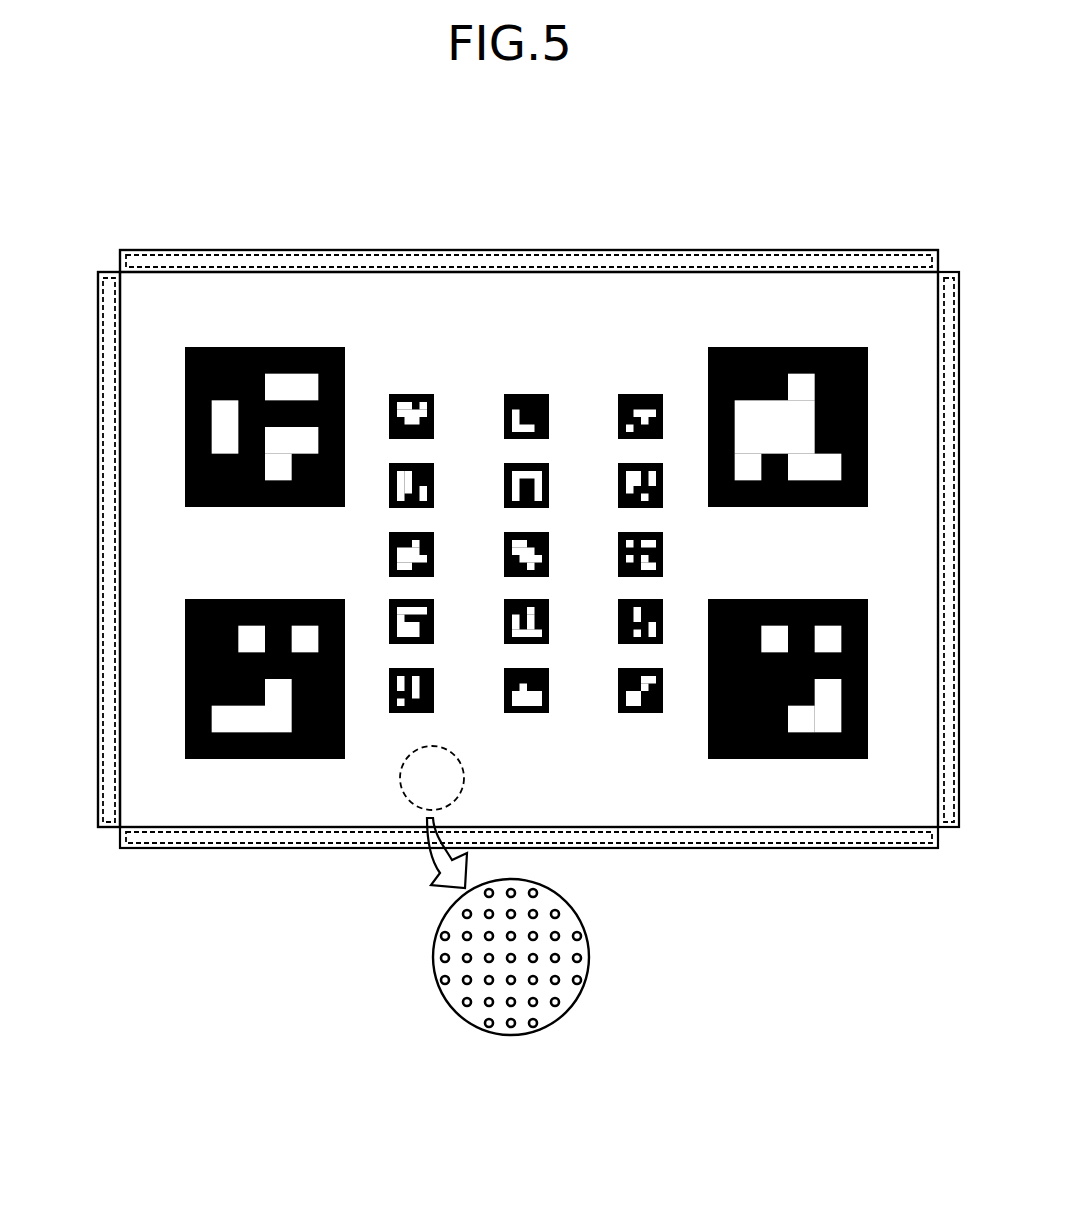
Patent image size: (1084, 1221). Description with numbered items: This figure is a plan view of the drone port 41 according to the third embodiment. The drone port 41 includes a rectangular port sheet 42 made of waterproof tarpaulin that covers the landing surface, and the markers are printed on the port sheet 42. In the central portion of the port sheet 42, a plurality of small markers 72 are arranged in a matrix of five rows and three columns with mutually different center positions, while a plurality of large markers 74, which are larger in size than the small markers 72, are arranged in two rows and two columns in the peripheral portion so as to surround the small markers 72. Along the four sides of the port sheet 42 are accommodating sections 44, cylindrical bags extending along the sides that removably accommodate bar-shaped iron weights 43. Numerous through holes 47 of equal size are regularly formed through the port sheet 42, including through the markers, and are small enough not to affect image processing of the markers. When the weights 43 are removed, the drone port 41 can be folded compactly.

The drone port 41 is at (664, 243).
The port sheet 42 is at (505, 300).
The weights 43 is at (215, 256).
The accommodating sections 44 is at (104, 272).
The through holes 47 is at (507, 1005).
The small markers 72 is at (663, 481).
The large markers 74 is at (822, 348).